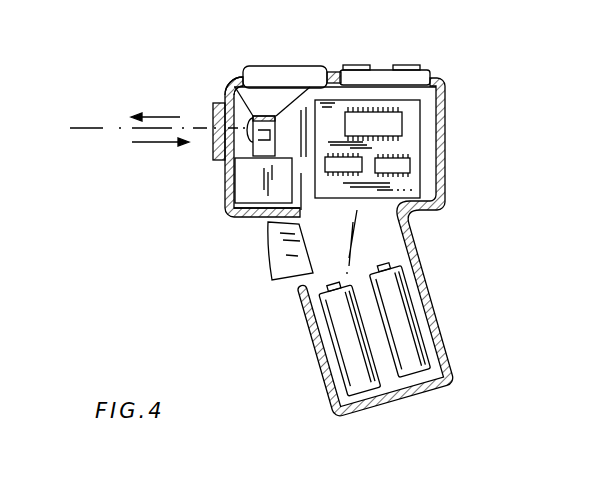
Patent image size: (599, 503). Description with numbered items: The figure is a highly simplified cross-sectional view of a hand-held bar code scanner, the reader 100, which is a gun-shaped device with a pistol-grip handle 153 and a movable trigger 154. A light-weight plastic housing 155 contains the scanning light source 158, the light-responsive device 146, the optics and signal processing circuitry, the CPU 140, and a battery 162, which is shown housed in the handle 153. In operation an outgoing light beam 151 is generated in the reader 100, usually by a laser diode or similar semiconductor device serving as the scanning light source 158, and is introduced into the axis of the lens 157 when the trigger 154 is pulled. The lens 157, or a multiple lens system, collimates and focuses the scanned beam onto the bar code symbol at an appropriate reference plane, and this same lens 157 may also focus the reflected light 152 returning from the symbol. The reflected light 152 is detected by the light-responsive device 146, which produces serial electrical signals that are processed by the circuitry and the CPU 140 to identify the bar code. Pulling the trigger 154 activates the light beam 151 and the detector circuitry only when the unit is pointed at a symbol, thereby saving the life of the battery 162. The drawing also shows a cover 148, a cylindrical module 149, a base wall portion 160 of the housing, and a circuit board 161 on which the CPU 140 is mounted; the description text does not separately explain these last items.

The reader 100 is at (172, 268).
The CPU 140 is at (352, 120).
The light-responsive device 146 is at (253, 150).
The cover 148 is at (388, 66).
The laser sighting module 149 is at (275, 77).
The outgoing light beam 151 is at (161, 116).
The reflected light 152 is at (157, 143).
The handle 153 is at (317, 338).
The trigger 154 is at (272, 253).
The housing 155 is at (447, 163).
The lens 157 is at (233, 78).
The scanning light source 158 is at (269, 115).
The housing base wall 160 is at (229, 218).
The printed circuit board 161 is at (414, 113).
The battery 162 is at (408, 316).